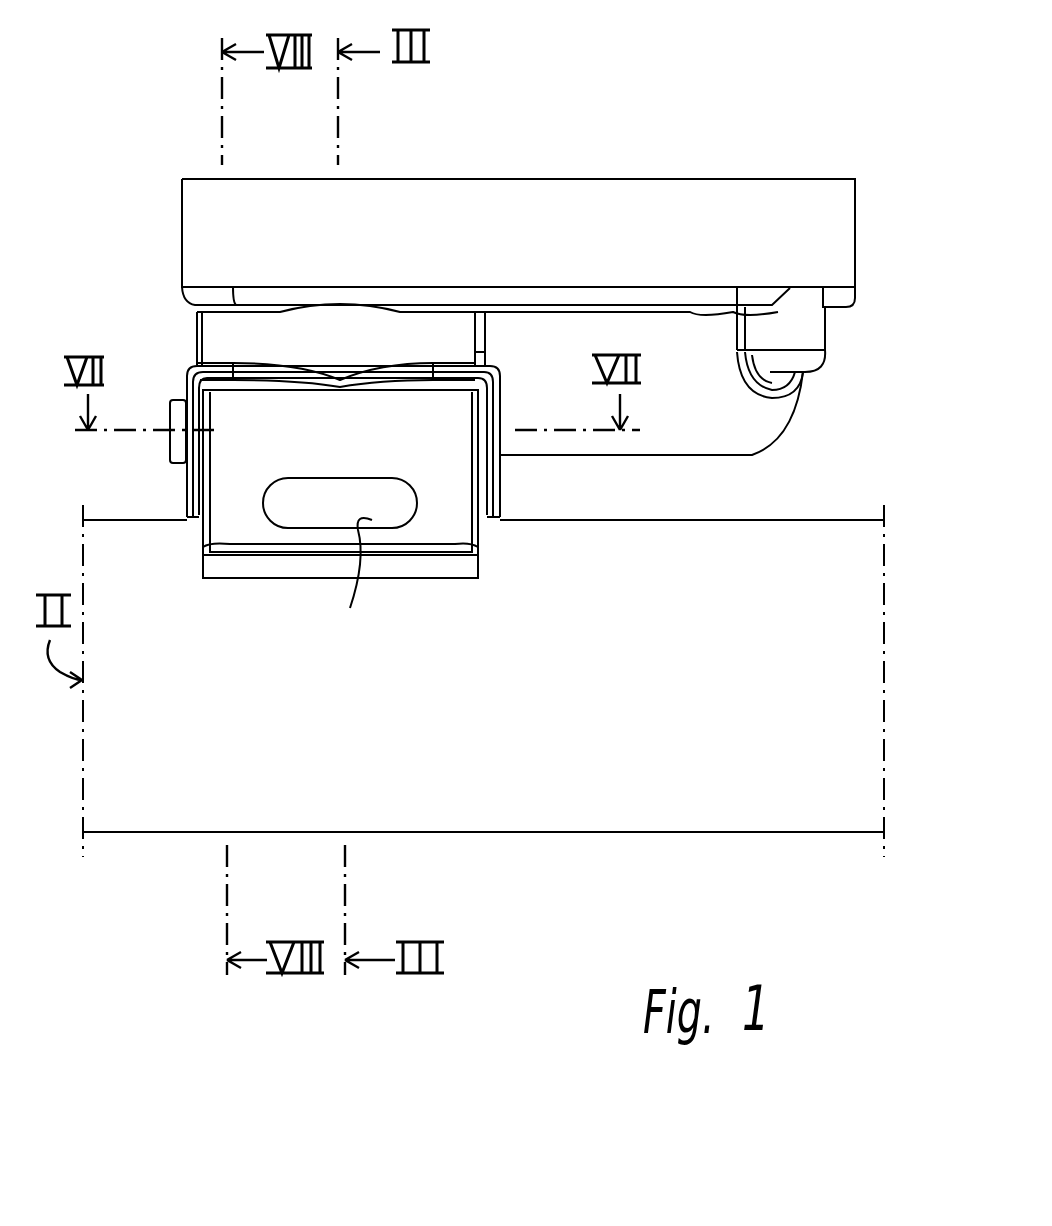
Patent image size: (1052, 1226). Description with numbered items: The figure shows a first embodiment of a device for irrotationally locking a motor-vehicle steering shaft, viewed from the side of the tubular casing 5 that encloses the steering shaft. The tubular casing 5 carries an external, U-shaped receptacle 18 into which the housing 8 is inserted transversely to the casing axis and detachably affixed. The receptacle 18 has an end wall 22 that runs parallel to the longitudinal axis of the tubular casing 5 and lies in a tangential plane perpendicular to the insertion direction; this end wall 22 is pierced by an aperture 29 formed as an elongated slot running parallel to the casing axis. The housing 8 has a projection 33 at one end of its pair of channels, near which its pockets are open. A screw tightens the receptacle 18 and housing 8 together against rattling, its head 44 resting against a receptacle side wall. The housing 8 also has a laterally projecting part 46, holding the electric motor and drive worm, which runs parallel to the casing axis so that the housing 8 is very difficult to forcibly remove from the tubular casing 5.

The housing 8 is at (566, 210).
The laterally projecting part 46 is at (701, 415).
The receptacle 18 is at (497, 554).
The head 44 is at (178, 418).
The end wall 22 is at (243, 515).
The projection 33 is at (330, 496).
The aperture 29 is at (376, 583).
The tubular casing 5 is at (630, 810).